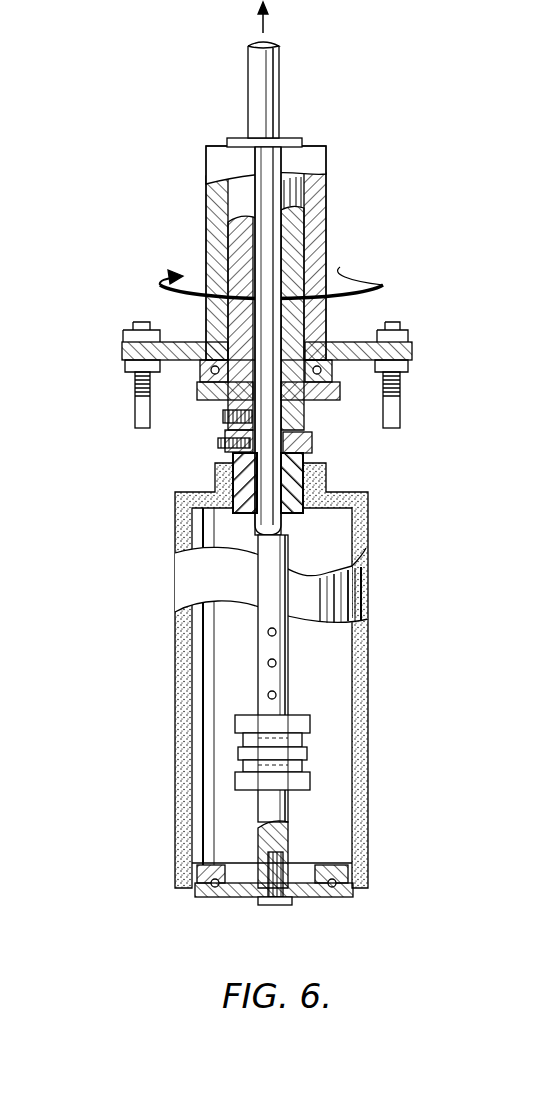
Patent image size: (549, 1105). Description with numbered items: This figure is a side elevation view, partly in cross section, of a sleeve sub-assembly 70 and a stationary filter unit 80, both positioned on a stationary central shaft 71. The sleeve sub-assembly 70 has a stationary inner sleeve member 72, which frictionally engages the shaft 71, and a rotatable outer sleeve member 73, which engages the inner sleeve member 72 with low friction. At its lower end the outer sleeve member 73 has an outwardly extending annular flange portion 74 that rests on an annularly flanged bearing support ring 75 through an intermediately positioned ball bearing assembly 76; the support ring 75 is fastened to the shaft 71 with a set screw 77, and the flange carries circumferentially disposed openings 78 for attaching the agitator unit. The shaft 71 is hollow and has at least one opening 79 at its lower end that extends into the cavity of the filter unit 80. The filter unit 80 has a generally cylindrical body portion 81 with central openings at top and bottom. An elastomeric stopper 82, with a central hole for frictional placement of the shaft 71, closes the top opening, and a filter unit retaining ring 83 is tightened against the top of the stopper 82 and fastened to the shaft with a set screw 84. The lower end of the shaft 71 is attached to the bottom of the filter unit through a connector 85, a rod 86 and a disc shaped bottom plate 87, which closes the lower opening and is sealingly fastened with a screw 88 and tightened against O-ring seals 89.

The sleeve sub-assembly 70 is at (301, 284).
The central shaft 71 is at (248, 78).
The inner sleeve member 72 is at (245, 202).
The outer sleeve member 73 is at (206, 268).
The annular flange portion 74 is at (412, 348).
The bearing support ring 75 is at (303, 403).
The ball bearing assembly 76 is at (337, 373).
The set screw 77 is at (223, 417).
The circumferentially disposed openings 78 is at (122, 348).
The opening 79 is at (278, 663).
The filter unit 80 is at (158, 712).
The cylindrical body portion 81 is at (368, 588).
The elastomeric stopper 82 is at (300, 517).
The filter unit retaining ring 83 is at (225, 432).
The set screw 84 is at (218, 443).
The connector 85 is at (297, 713).
The rod 86 is at (290, 800).
The bottom plate 87 is at (215, 897).
The screw 88 is at (288, 903).
The O-ring seals 89 is at (292, 882).